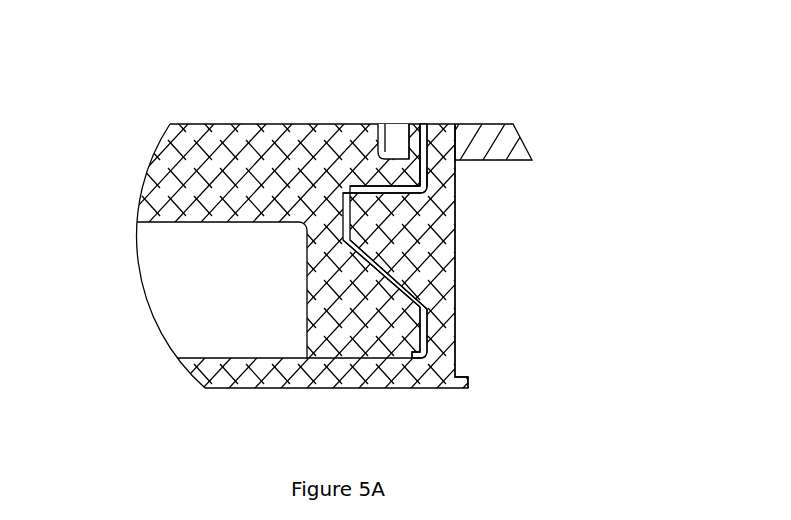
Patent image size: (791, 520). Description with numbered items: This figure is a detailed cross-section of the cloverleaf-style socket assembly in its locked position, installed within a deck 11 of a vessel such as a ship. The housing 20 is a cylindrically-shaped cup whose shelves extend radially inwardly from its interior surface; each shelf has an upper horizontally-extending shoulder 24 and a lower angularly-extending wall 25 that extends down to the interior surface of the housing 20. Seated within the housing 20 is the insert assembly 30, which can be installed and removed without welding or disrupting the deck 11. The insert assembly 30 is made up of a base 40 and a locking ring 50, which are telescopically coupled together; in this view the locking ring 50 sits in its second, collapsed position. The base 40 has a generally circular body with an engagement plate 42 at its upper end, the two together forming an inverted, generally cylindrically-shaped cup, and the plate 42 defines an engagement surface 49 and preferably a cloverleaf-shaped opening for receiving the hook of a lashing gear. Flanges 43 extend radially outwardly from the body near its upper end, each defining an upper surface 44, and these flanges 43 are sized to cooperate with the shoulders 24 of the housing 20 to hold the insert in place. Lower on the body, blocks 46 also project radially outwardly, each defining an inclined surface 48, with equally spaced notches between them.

The deck 11 is at (485, 124).
The housing 20 is at (467, 323).
The upper horizontally-extending shoulder 24 is at (418, 198).
The lower angularly-extending wall 25 is at (410, 307).
The insert assembly 30 is at (220, 108).
The base 40 is at (280, 110).
The engagement plate 42 is at (185, 122).
The flange 43 is at (392, 193).
The upper surface 44 is at (410, 124).
The block 46 is at (392, 373).
The inclined surface 48 is at (398, 290).
The engagement surface 49 is at (163, 223).
The locking ring 50 is at (400, 109).